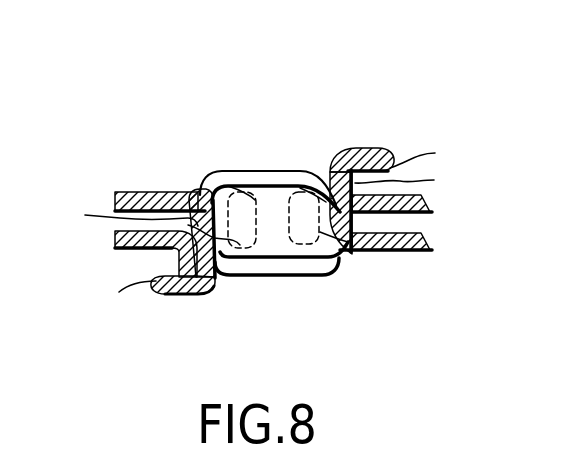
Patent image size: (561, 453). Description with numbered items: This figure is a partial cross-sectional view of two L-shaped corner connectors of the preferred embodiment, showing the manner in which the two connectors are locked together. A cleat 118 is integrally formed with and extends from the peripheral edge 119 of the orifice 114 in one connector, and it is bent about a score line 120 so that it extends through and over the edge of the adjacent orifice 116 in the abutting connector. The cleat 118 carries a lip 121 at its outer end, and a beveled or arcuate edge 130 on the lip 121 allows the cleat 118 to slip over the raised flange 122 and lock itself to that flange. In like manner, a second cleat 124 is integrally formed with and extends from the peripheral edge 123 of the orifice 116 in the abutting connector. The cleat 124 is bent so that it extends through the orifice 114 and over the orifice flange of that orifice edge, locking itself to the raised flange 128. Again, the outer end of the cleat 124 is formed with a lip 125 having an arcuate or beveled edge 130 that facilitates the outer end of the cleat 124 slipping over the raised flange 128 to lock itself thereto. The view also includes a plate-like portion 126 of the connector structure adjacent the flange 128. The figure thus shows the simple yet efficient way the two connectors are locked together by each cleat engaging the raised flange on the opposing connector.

The orifice 114 is at (264, 108).
The adjacent orifice 116 is at (337, 306).
The cleat 118 is at (252, 180).
The peripheral edge 119 is at (192, 188).
The score line 120 is at (123, 216).
The lip 121 is at (186, 297).
The raised flange 122 is at (192, 254).
The peripheral edge 123 is at (355, 260).
The cleat 124 is at (290, 258).
The lip 125 is at (352, 148).
The right plate 126 is at (355, 228).
The raised flange 128 is at (412, 181).
The beveled or arcuate edge 130 is at (299, 192).